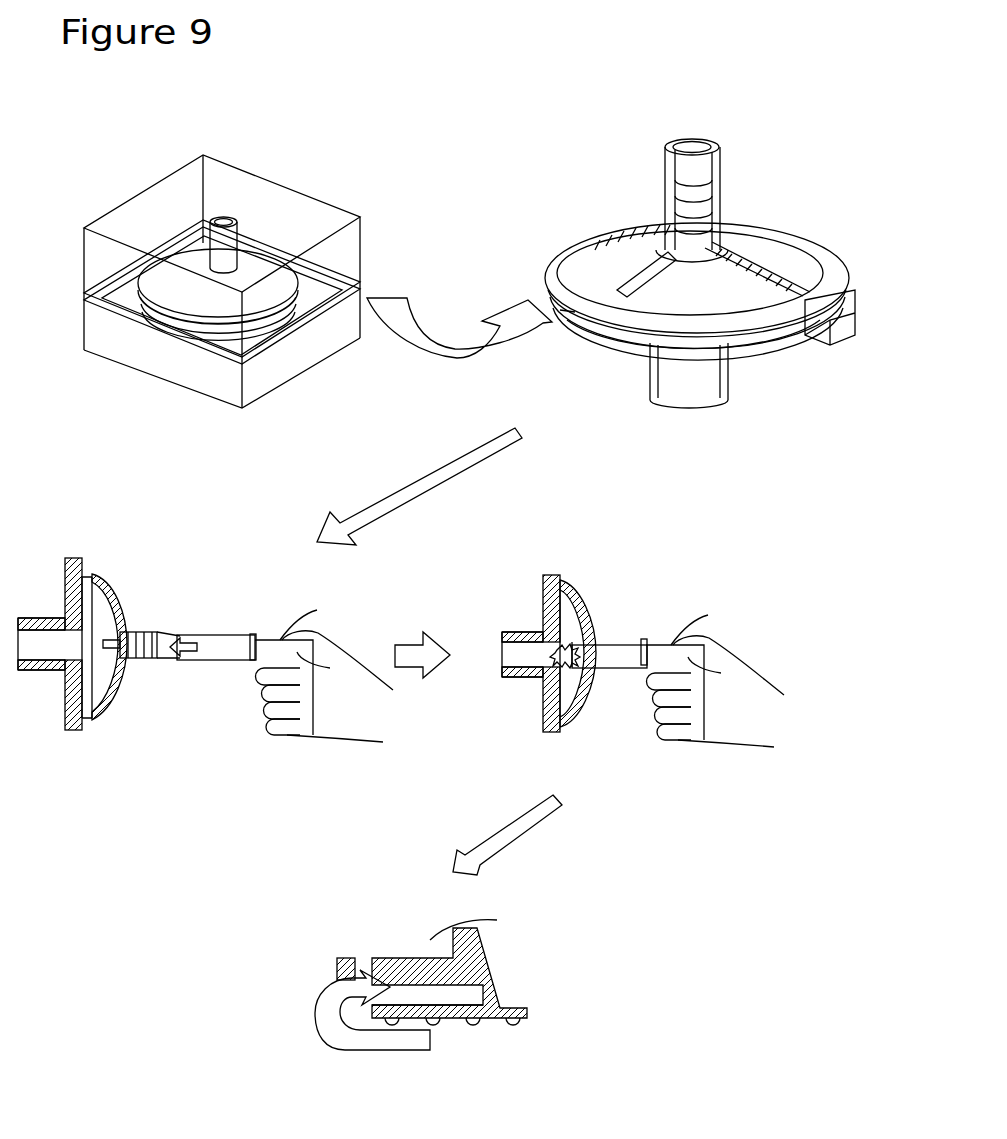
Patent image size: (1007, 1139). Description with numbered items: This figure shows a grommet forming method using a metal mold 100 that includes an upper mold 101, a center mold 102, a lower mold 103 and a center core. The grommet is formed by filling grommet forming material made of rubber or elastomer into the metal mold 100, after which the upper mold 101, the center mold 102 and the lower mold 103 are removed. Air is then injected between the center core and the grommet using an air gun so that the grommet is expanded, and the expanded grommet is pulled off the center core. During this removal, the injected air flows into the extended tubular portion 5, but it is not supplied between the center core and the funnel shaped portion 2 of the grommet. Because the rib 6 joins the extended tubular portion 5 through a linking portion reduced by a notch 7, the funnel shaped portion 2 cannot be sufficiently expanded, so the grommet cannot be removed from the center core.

The metal mold 100 is at (312, 125).
The upper mold 101 is at (297, 200).
The center mold 102 is at (340, 288).
The lower mold 103 is at (298, 362).
The funnel shaped portion 2 is at (637, 222).
The anti-turn-up rib 6 is at (415, 960).
The notch 7 is at (460, 995).
The extended tubular portion 5 is at (447, 1020).